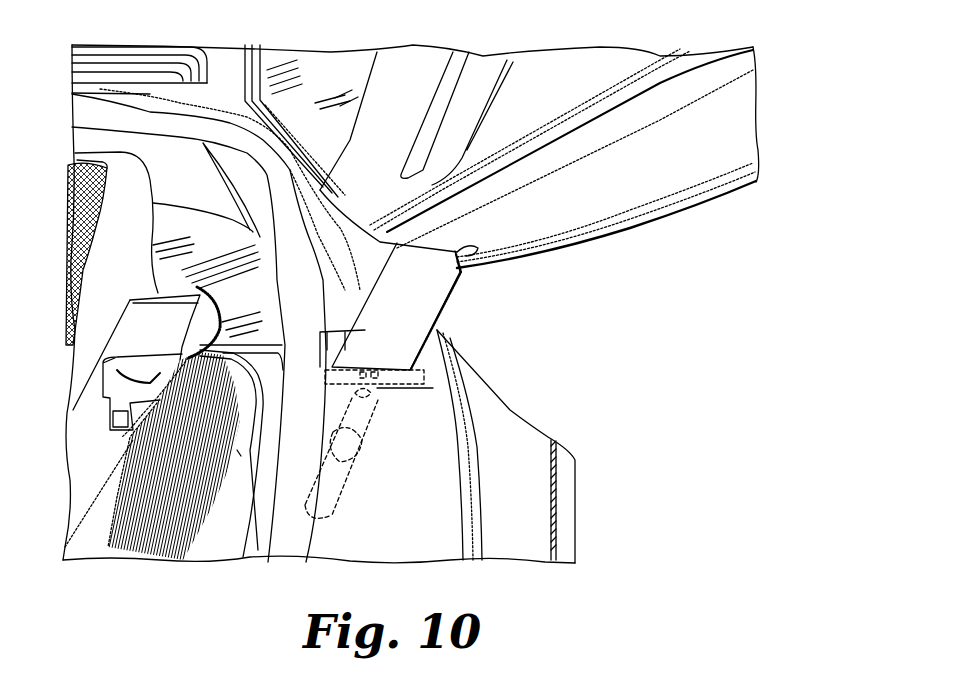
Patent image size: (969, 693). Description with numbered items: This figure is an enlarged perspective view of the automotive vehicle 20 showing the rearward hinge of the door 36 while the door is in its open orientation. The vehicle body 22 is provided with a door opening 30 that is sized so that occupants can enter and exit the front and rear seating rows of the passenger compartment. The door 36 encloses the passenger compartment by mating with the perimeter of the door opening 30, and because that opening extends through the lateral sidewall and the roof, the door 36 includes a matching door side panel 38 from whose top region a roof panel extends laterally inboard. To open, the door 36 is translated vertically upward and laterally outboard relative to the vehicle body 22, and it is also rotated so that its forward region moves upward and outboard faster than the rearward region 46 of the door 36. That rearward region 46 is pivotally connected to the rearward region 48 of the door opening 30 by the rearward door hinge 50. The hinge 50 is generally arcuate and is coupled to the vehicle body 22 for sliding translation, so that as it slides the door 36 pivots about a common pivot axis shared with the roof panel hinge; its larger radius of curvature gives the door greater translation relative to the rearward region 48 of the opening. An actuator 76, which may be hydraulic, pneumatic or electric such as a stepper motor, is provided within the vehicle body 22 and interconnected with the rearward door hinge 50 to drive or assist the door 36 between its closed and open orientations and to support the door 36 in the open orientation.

The automotive vehicle 20 is at (618, 364).
The vehicle body 22 is at (560, 454).
The door opening 30 is at (287, 527).
The door 36 is at (683, 217).
The door side panel 38 is at (530, 256).
The rearward region of the door 46 is at (612, 236).
The rearward region of the door opening 48 is at (415, 421).
The rearward door hinge 50 is at (452, 310).
The actuator 76 is at (350, 487).